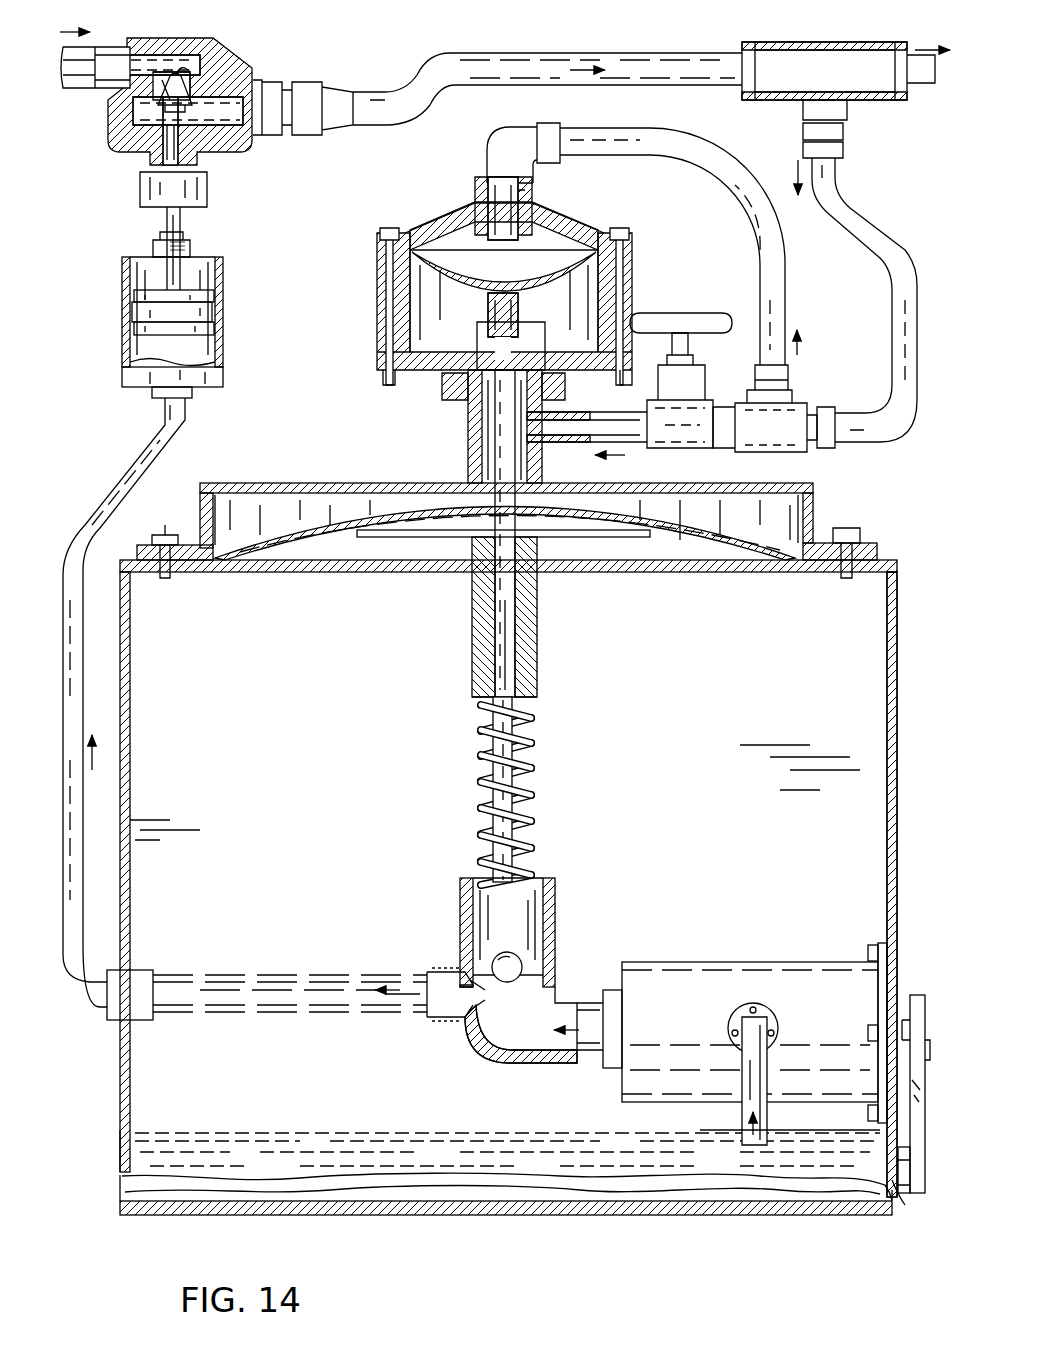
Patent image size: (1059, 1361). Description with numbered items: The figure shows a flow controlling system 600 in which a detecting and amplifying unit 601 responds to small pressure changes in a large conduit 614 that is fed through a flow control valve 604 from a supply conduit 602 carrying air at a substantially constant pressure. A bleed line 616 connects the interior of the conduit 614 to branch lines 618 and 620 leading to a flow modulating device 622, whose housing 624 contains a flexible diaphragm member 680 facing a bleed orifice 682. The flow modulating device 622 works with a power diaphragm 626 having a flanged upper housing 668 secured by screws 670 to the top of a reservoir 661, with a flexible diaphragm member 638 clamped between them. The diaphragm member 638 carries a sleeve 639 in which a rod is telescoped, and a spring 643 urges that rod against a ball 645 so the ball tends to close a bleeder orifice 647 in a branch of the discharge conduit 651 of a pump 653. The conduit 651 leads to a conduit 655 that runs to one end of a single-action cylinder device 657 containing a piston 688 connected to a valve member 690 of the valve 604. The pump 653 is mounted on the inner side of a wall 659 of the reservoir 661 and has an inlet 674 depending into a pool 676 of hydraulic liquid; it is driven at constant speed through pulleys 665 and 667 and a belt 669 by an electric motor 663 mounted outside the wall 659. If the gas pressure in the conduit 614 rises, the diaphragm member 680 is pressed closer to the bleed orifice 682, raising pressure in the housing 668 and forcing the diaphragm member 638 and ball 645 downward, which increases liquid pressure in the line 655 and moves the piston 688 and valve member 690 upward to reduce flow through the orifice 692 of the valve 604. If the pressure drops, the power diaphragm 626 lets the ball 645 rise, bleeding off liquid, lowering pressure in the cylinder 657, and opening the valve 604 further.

The flow controlling system 600 is at (878, 528).
The detecting and amplifying unit 601 is at (828, 1212).
The supply conduit 602 is at (75, 88).
The flow control valve 604 is at (225, 150).
The large conduit 614 is at (545, 62).
The bleed line 616 is at (895, 358).
The branch line 618 is at (760, 262).
The branch line 620 is at (630, 445).
The flow modulating device 622 is at (810, 462).
The diaphragm actuator housing 624 is at (635, 250).
The power diaphragm 626 is at (415, 468).
The diaphragm member 638 is at (298, 545).
The sleeve 639 is at (495, 618).
The spring 643 is at (493, 730).
The ball 645 is at (495, 958).
The bleeder orifice 647 is at (470, 1033).
The discharge conduit 651 is at (600, 1060).
The pump 653 is at (688, 962).
The conduit 655 is at (128, 478).
The single-action cylinder device 657 is at (222, 272).
The wall 659 is at (898, 905).
The reservoir 661 is at (118, 1165).
The electric motor 663 is at (905, 1203).
The pulley 665 is at (922, 995).
The pulley 667 is at (926, 1170).
The flanged upper housing 668 is at (255, 485).
The belt 669 is at (918, 1107).
The screws 670 is at (182, 535).
The inlet 674 is at (740, 1115).
The pool 676 is at (852, 1130).
The diaphragm member 680 is at (562, 262).
The bleed orifice 682 is at (520, 292).
The piston 688 is at (130, 320).
The valve member 690 is at (150, 95).
The orifice 692 is at (185, 75).